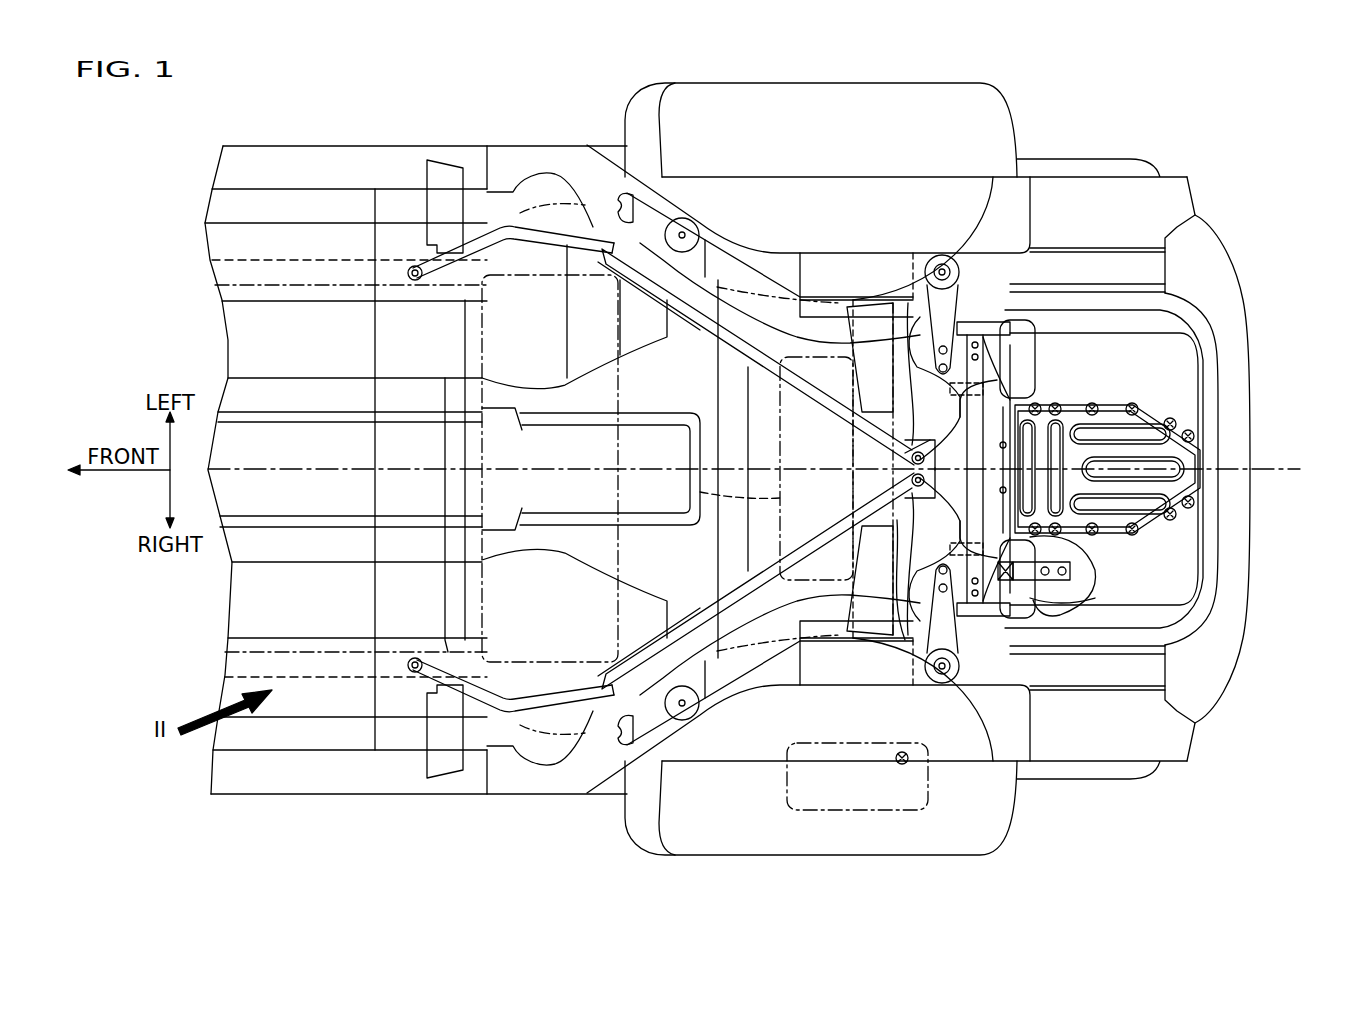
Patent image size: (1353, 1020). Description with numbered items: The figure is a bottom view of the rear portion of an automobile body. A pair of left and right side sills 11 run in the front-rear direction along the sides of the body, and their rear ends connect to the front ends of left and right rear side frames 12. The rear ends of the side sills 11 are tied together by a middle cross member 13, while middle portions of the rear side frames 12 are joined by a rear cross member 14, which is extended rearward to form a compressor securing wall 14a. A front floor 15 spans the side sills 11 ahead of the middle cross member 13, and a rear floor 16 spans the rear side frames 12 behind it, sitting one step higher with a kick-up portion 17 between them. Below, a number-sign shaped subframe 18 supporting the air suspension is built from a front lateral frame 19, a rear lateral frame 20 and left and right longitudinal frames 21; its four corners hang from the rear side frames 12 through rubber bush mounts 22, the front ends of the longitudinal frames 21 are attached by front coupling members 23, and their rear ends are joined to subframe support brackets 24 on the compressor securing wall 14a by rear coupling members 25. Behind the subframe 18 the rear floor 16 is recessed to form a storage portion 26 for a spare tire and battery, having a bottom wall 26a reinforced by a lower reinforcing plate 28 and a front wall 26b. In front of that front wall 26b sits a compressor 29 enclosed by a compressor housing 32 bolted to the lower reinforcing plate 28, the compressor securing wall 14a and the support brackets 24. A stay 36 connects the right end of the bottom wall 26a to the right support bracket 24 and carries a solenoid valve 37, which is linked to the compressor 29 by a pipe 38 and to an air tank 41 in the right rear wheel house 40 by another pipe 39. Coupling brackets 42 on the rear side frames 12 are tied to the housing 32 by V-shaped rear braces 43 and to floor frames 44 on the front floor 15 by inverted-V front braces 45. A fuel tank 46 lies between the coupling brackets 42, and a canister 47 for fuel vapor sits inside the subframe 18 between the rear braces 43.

The side sills 11 is at (334, 150).
The rear side frames 12 is at (873, 262).
The middle cross member 13 is at (448, 453).
The rear cross member 14 is at (855, 478).
The compressor securing wall 14a is at (910, 441).
The front floor 15 is at (288, 355).
The rear floor 16 is at (775, 435).
The kick-up portion 17 is at (470, 480).
The subframe 18 is at (750, 240).
The front lateral frame 19 is at (725, 450).
The rear lateral frame 20 is at (877, 538).
The longitudinal frames 21 is at (810, 312).
The rubber bush mounts 22 is at (700, 224).
The front coupling members 23 is at (655, 212).
The subframe support brackets 24 is at (922, 362).
The rear coupling members 25 is at (962, 318).
The recessed storage portion 26 is at (1088, 305).
The bottom wall 26a is at (1127, 340).
The front wall 26b is at (1040, 355).
The lower reinforcing plate 28 is at (1112, 432).
The compressor 29 is at (1042, 394).
The compressor housing 32 is at (905, 548).
The stay 36 is at (1095, 573).
The solenoid valve 37 is at (1047, 613).
The pipe 38 is at (1062, 543).
The pipe 39 is at (905, 752).
The rear wheel house 40 is at (987, 122).
The air tank 41 is at (787, 812).
The coupling brackets 42 is at (548, 183).
The rear braces 43 is at (633, 300).
The floor frames 44 is at (300, 258).
The front braces 45 is at (485, 245).
The fuel tank 46 is at (482, 601).
The canister 47 is at (723, 492).